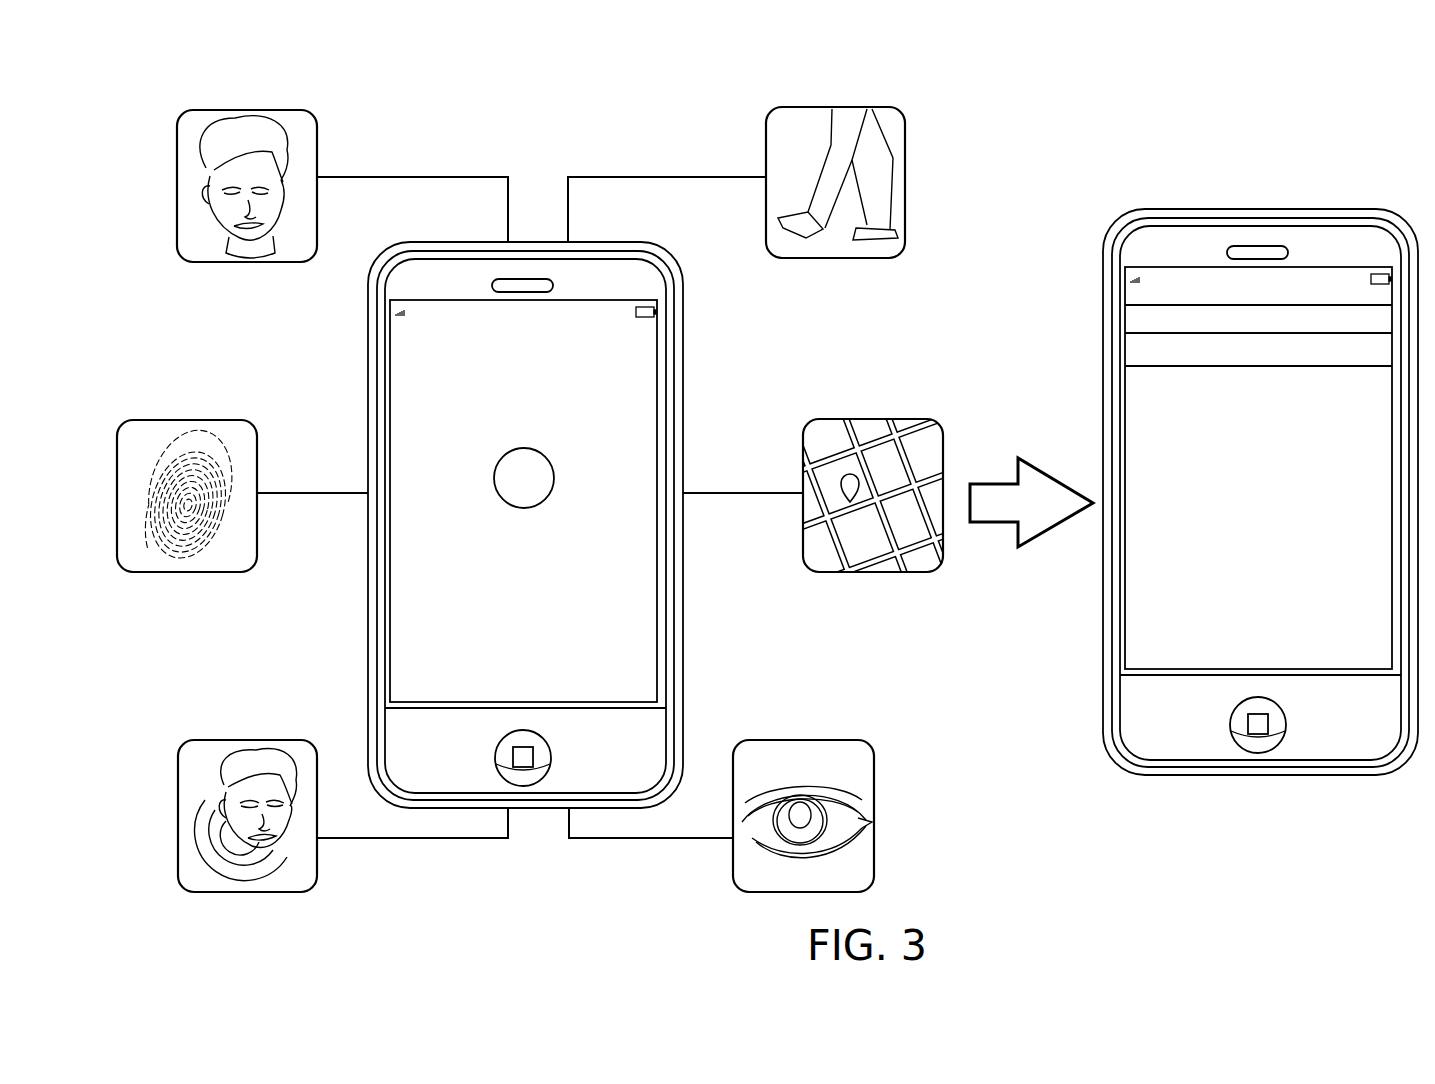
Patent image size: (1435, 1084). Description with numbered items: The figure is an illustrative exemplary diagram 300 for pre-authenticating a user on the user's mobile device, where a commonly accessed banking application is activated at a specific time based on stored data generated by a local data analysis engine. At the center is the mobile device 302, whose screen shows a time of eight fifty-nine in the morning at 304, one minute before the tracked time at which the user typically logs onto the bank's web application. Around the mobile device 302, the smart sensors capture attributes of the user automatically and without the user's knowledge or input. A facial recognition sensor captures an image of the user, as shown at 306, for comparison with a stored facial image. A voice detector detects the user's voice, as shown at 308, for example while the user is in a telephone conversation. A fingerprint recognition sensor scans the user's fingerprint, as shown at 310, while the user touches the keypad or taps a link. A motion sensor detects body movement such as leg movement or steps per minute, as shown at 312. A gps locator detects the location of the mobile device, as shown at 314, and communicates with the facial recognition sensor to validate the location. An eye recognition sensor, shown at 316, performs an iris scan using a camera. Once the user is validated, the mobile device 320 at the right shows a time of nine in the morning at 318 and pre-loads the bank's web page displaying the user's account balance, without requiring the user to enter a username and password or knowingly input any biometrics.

The diagram 300 is at (498, 158).
The mobile device 302 is at (398, 720).
The time display 304 is at (562, 322).
The facial recognition capture 306 is at (232, 110).
The voice detection 308 is at (206, 740).
The fingerprint scan 310 is at (170, 420).
The body movement detection 312 is at (817, 107).
The location detection 314 is at (857, 419).
The eye recognition sensor 316 is at (762, 740).
The time display 318 is at (1265, 270).
The mobile device 320 is at (1363, 733).